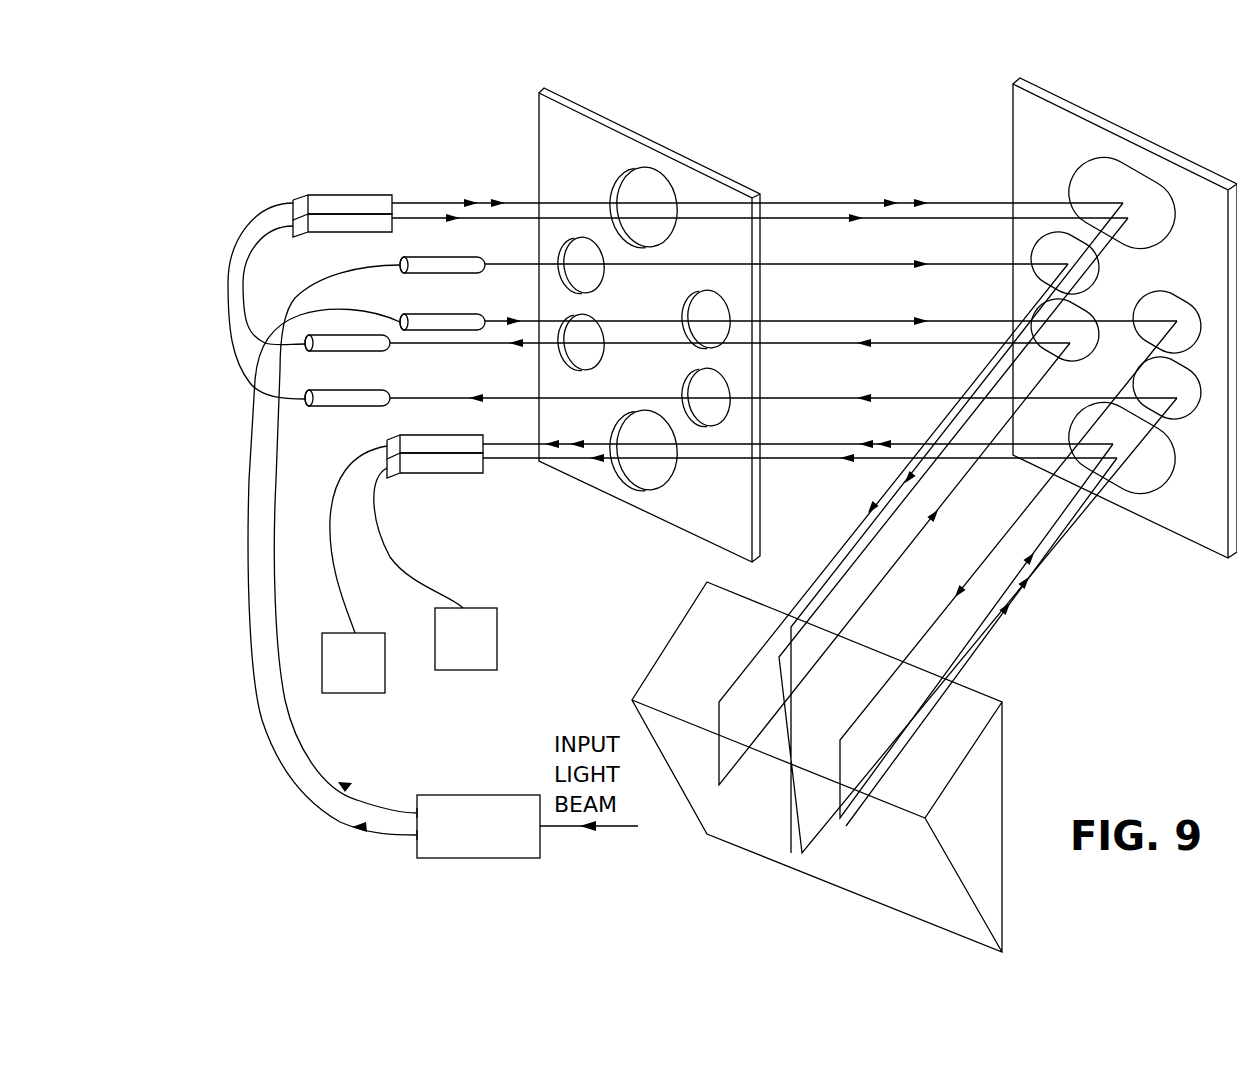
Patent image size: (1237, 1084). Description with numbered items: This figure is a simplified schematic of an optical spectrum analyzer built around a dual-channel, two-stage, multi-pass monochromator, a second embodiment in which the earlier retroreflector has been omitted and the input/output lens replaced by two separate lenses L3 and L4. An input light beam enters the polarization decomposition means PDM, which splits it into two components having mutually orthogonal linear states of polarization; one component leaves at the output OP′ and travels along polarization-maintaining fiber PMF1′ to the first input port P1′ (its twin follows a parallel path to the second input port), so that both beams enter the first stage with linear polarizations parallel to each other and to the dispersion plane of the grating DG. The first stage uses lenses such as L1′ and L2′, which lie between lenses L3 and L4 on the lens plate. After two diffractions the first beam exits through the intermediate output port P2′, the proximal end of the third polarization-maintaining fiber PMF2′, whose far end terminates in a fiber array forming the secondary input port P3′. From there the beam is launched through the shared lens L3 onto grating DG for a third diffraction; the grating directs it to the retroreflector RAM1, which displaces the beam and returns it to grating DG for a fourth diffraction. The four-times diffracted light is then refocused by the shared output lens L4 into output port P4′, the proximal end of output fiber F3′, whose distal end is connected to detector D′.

The grating DG is at (1093, 130).
The lens L3 is at (670, 190).
The lens L4 is at (641, 490).
The lens L1′ is at (606, 278).
The lens L2′ is at (606, 358).
The retroreflector RAM1 is at (970, 697).
The secondary input port P3′ is at (340, 224).
The output port P4′ is at (441, 474).
The first input port P1′ is at (445, 258).
The intermediate output port P2′ is at (377, 336).
The third polarization-maintaining fiber PMF2′ is at (250, 277).
The polarization-maintaining fiber PMF1′ is at (310, 798).
The output fiber F3′ is at (378, 528).
The detector D′ is at (353, 663).
The polarization decomposition means PDM is at (478, 826).
The output port OP′ is at (417, 843).